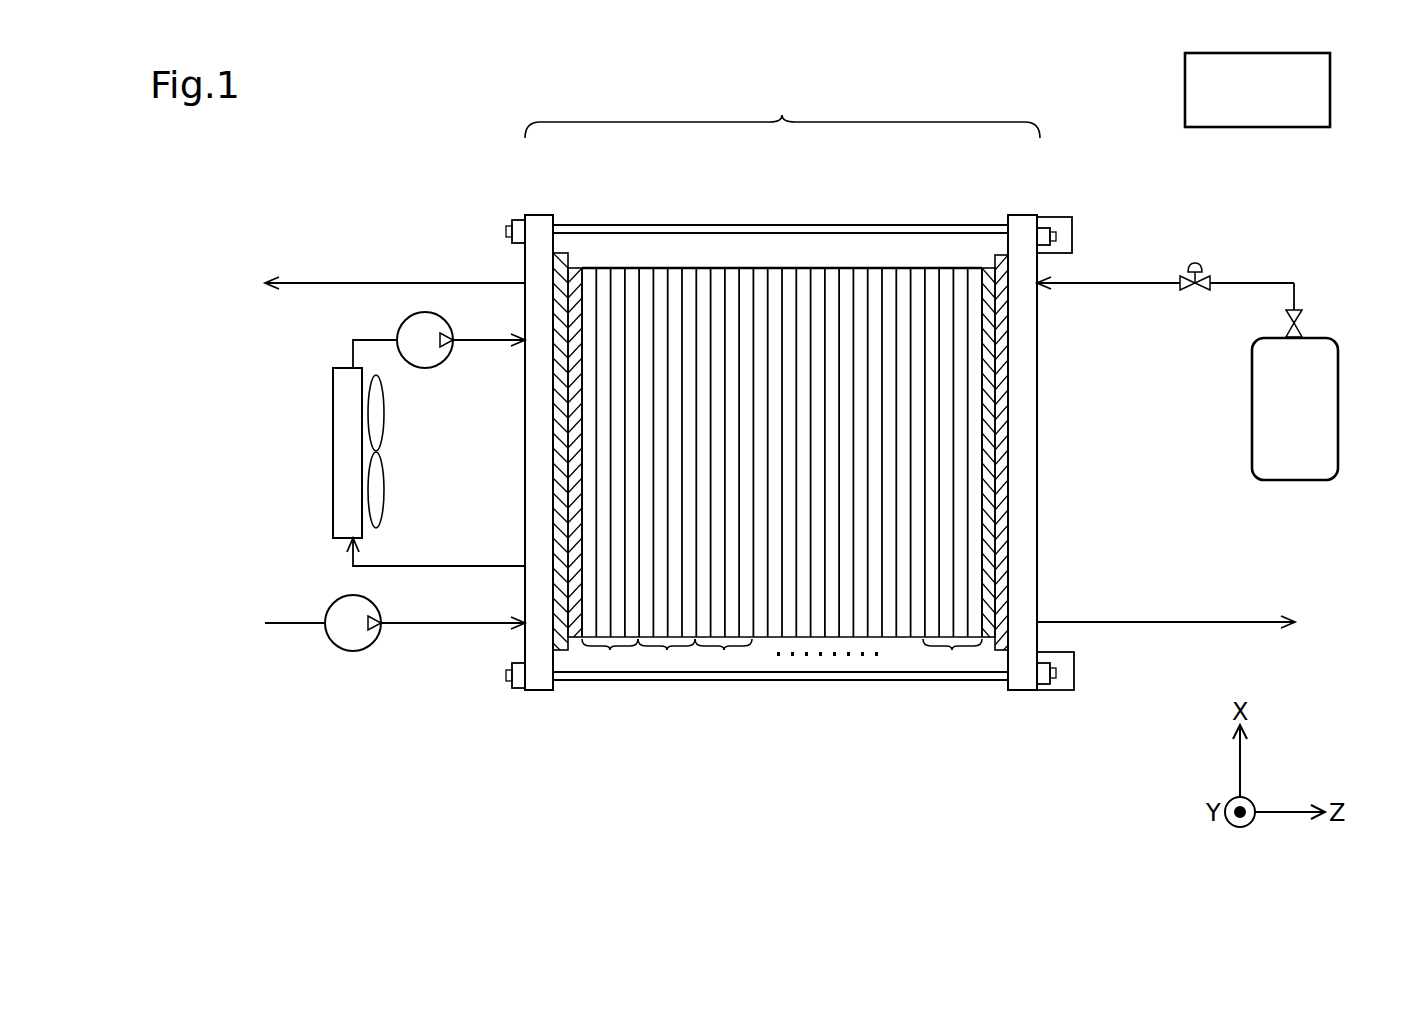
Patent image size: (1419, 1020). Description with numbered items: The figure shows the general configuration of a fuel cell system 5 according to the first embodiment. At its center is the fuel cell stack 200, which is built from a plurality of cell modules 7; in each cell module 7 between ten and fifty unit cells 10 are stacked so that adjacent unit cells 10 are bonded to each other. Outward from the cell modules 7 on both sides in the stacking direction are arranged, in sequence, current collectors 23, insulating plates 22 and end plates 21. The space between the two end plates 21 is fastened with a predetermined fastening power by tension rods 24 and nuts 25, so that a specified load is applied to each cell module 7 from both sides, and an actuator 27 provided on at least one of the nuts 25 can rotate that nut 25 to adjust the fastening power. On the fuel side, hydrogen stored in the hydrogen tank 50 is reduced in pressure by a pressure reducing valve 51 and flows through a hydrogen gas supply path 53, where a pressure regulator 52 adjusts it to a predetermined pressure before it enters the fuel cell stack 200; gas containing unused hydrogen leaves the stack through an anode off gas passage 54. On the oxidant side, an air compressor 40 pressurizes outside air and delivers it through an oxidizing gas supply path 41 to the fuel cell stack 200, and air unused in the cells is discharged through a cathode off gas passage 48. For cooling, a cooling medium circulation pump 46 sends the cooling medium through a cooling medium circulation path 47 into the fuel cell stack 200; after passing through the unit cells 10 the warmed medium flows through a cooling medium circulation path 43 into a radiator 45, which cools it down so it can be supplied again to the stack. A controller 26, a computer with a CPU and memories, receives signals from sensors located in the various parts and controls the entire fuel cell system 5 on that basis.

The fuel cell system 5 is at (390, 168).
The fuel cell stack 200 is at (782, 122).
The unit cell 10 is at (790, 268).
The cell module 7 is at (782, 655).
The end plate 21 is at (546, 215).
The insulating plate 22 is at (560, 253).
The current collector 23 is at (575, 268).
The tension rod 24 is at (700, 225).
The nut 25 is at (512, 222).
The controller 26 is at (1185, 95).
The actuator 27 is at (1062, 217).
The air compressor 40 is at (350, 651).
The oxidizing gas supply path 41 is at (445, 623).
The cooling medium circulation path 43 is at (411, 566).
The radiator 45 is at (333, 448).
The cooling medium circulation pump 46 is at (426, 368).
The cooling medium circulation path 47 is at (492, 340).
The cathode off gas passage 48 is at (426, 283).
The hydrogen tank 50 is at (1338, 405).
The pressure reducing valve 51 is at (1300, 323).
The pressure regulator 52 is at (1197, 290).
The hydrogen gas supply path 53 is at (1151, 283).
The anode off gas passage 54 is at (1239, 622).